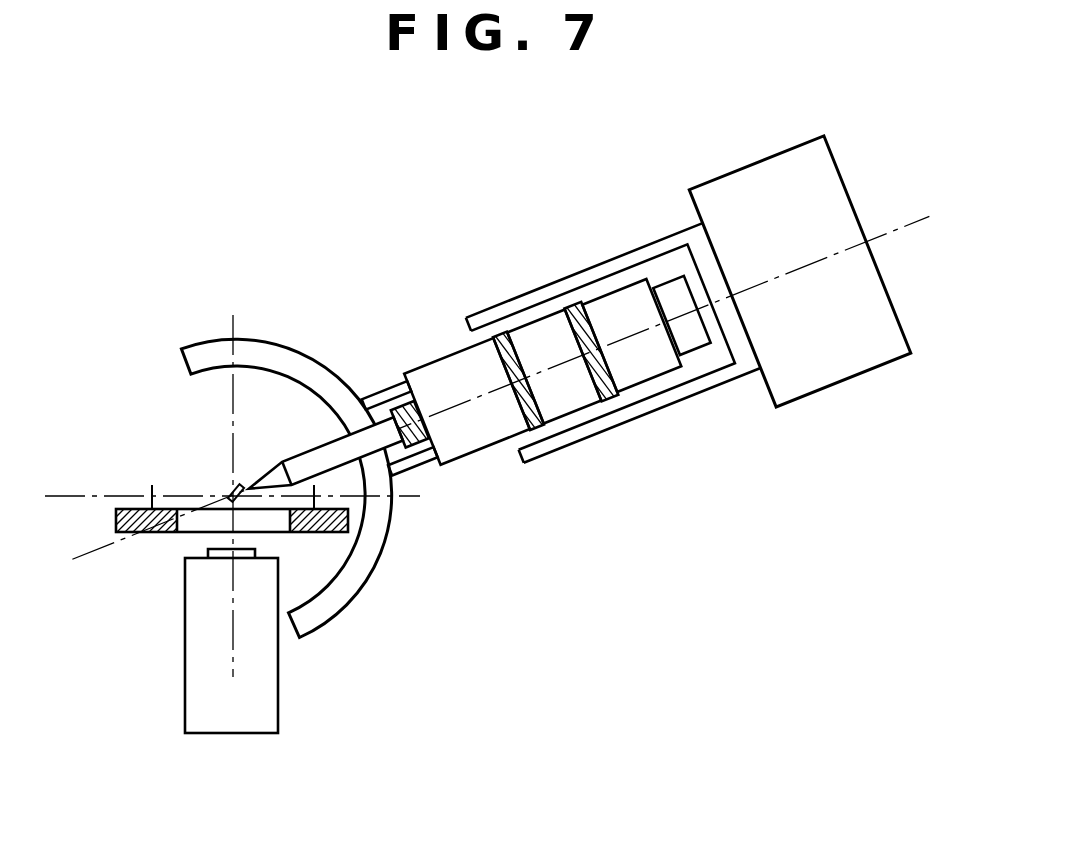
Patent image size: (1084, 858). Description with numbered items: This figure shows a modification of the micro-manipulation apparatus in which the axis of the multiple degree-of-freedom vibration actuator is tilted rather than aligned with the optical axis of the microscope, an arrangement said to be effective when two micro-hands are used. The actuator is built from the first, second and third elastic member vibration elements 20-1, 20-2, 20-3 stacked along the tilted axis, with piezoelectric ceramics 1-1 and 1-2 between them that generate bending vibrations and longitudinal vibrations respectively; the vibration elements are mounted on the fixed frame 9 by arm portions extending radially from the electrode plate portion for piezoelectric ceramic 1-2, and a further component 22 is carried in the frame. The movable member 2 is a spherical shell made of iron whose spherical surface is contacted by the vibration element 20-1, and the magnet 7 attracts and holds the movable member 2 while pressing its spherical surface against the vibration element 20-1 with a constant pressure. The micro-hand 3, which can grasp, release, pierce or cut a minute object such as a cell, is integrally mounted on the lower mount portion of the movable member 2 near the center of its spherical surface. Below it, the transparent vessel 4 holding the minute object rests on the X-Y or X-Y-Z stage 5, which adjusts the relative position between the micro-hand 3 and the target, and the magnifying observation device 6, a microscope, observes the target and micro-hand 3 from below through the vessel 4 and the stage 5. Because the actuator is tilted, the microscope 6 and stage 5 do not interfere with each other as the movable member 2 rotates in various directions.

The movable member 2 is at (257, 340).
The micro-hand 3 is at (225, 488).
The vessel 4 is at (150, 490).
The X-Y or X-Y-Z stage 5 is at (115, 526).
The magnifying observation device 6 is at (281, 700).
The magnet 7 is at (382, 395).
The fixed frame 9 is at (717, 382).
The source unit 22 is at (668, 291).
The first elastic member vibration element 20-1 is at (460, 443).
The second elastic member vibration element 20-2 is at (533, 345).
The third elastic member vibration element 20-3 is at (650, 374).
The piezoelectric ceramic 1-1 is at (593, 313).
The piezoelectric ceramic 1-2 is at (530, 399).